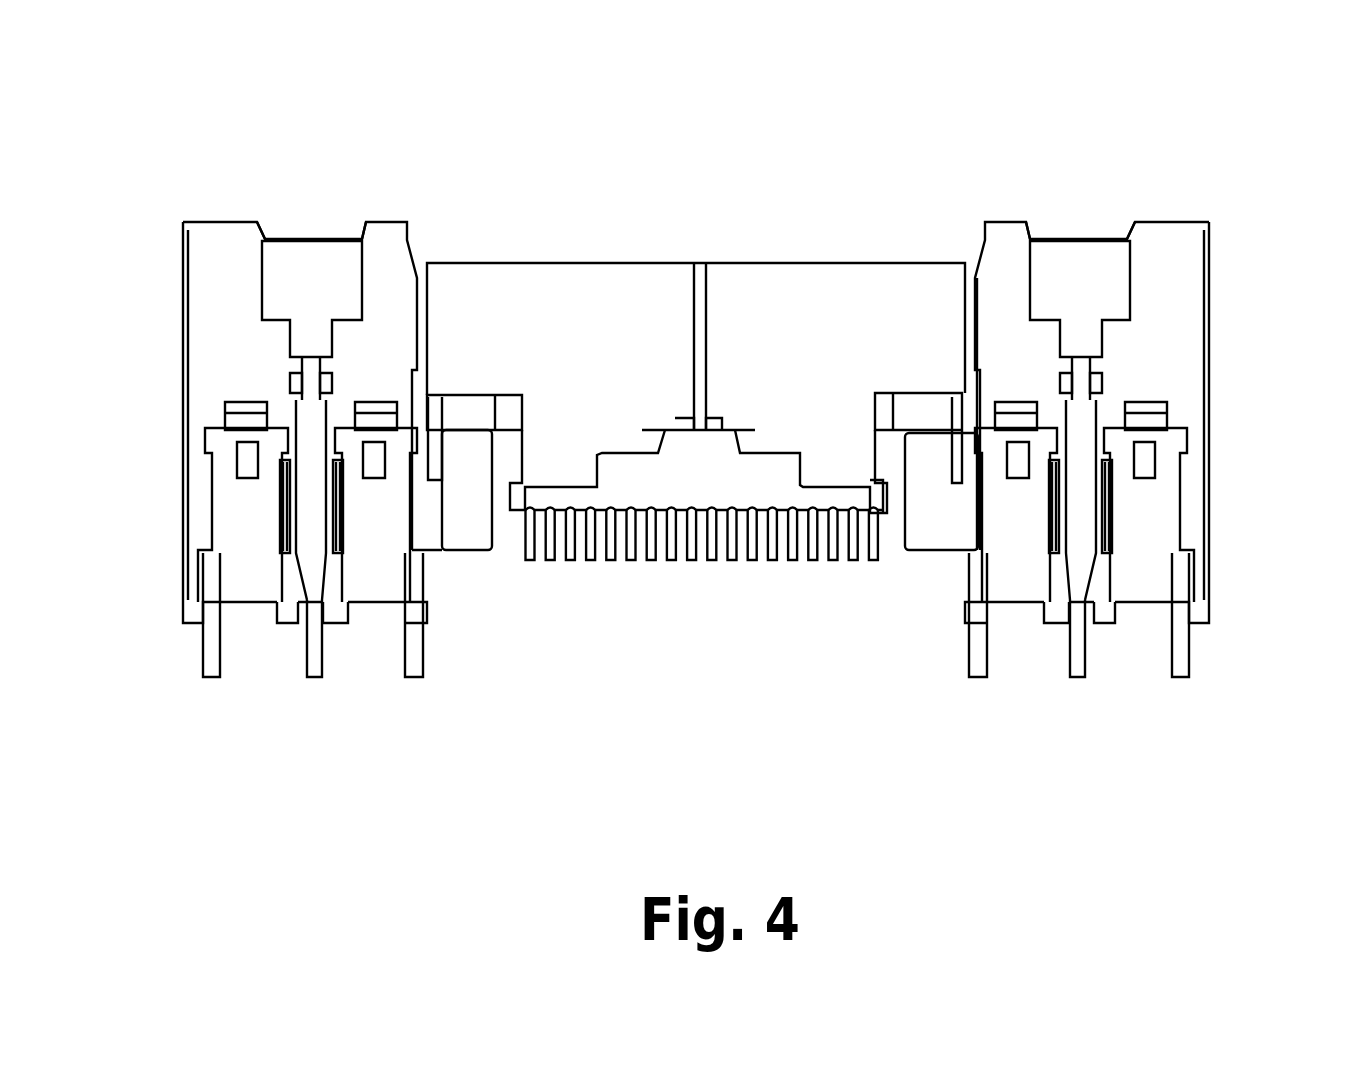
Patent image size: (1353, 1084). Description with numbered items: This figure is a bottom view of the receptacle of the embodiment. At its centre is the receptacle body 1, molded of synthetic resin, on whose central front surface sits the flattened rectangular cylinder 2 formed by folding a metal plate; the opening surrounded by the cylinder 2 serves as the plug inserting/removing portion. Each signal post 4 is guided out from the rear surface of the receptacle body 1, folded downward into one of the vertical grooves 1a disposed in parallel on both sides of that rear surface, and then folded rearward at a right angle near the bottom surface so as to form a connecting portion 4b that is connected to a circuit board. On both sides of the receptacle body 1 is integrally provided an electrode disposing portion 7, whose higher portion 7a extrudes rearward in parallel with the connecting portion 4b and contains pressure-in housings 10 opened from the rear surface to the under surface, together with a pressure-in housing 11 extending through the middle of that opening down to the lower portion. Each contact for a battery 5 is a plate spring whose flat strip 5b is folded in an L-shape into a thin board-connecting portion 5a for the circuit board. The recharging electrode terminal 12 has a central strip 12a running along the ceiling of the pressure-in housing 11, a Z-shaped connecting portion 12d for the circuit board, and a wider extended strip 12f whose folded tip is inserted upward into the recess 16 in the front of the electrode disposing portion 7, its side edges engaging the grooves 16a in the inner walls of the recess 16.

The receptacle body 1 is at (748, 515).
The vertical grooves 1a is at (712, 515).
The flattened rectangular cylinder 2 is at (638, 285).
The signal post 4 is at (532, 553).
The connecting portion 4b is at (528, 555).
The contact for a battery 5 is at (213, 535).
The board-connecting portion 5a is at (213, 668).
The flat strip 5b is at (248, 483).
The electrode disposing portion 7 is at (212, 220).
The higher portion 7a is at (207, 337).
The pressure-in housings 10 is at (235, 542).
The pressure-in housing 11 is at (317, 423).
The recharging electrode terminal 12 is at (322, 287).
The central strip 12a is at (318, 550).
The connecting portion 12d is at (312, 665).
The wider extended strip 12f is at (290, 258).
The recess 16 is at (310, 225).
The grooves 16a is at (263, 232).